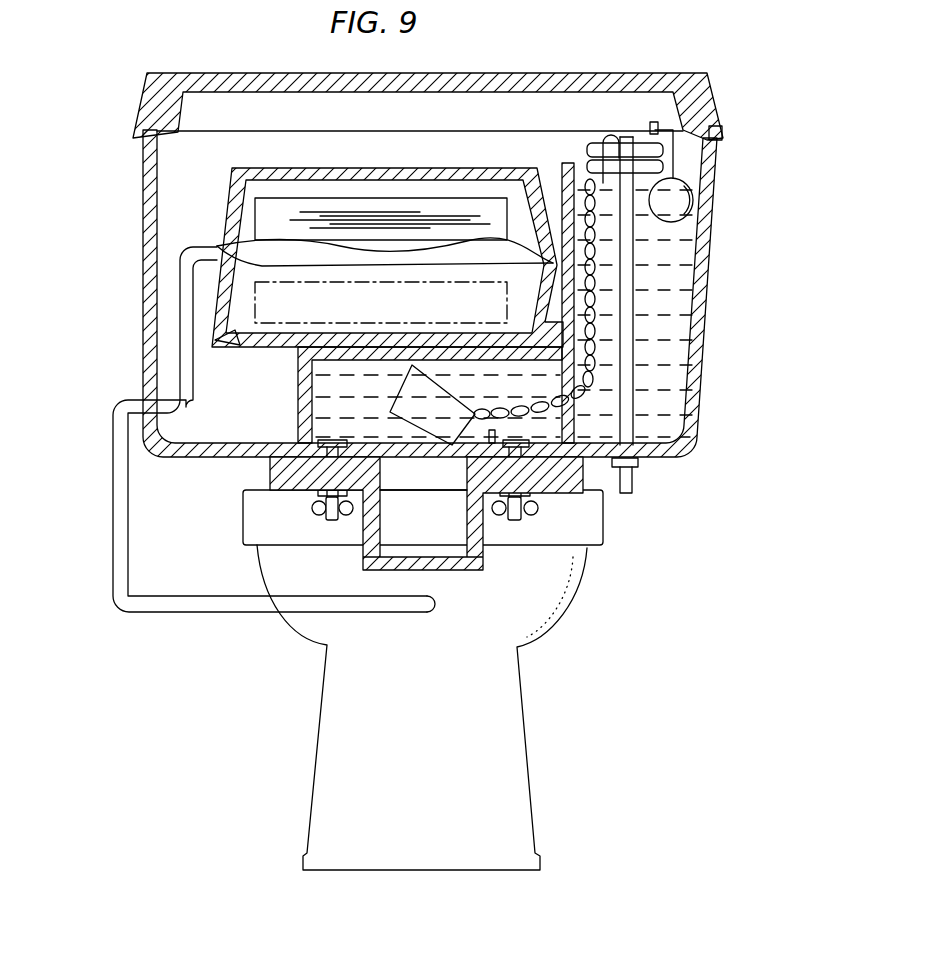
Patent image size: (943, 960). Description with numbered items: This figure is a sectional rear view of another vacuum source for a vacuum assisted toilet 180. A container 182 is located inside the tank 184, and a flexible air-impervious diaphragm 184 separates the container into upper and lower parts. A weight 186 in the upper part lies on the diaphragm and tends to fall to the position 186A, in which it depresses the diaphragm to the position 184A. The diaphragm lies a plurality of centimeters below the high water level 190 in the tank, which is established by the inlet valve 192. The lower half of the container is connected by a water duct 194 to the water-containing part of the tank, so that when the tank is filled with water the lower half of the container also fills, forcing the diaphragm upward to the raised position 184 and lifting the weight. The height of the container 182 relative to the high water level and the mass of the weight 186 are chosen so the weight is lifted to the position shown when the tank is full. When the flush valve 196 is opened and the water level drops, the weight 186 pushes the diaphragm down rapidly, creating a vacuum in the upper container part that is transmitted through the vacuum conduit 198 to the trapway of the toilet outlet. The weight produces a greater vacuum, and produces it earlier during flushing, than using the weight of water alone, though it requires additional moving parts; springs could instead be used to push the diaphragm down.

The vacuum assisted toilet 180 is at (752, 140).
The container 182 is at (212, 218).
The tank 184 is at (252, 254).
The depressed diaphragm position 184A is at (233, 340).
The weight 186 is at (443, 198).
The fallen weight position 186A is at (247, 306).
The high water level 190 is at (690, 178).
The inlet valve 192 is at (689, 147).
The water duct 194 is at (549, 343).
The flush valve 196 is at (303, 397).
The vacuum conduit 198 is at (118, 592).